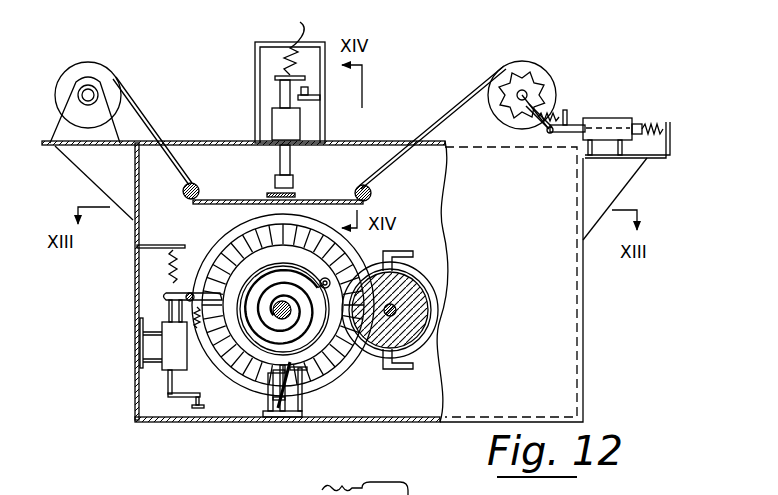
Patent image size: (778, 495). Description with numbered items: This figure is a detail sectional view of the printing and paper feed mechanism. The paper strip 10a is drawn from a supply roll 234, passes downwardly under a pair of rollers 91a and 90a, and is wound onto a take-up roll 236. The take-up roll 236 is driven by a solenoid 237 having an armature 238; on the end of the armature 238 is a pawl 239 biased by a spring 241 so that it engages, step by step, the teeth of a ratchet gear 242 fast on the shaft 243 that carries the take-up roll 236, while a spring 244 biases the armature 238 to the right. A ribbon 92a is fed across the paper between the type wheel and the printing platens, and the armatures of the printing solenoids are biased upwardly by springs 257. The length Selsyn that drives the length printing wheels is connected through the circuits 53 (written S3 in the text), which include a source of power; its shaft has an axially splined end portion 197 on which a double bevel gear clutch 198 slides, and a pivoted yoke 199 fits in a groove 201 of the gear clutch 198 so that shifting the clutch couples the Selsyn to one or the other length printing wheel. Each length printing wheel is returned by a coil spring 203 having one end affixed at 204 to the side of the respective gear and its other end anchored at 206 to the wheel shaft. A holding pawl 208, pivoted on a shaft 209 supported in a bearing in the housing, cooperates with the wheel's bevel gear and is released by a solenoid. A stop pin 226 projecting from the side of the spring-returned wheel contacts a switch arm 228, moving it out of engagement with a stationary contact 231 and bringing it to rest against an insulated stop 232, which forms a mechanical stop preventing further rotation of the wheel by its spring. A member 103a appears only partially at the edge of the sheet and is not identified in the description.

The paper strip 10a is at (152, 141).
The roller 91a is at (199, 186).
The roller 90a is at (363, 185).
The ribbon 92a is at (300, 190).
The spring 257 is at (283, 42).
The supply roll 234 is at (113, 88).
The take-up roll 236 is at (497, 72).
The shaft 243 is at (520, 100).
The ratchet gear 242 is at (540, 95).
The pawl 239 is at (528, 112).
The spring 241 is at (553, 115).
The armature 238 is at (578, 120).
The solenoid 237 is at (622, 118).
The spring 244 is at (660, 114).
The shaft 209 is at (190, 292).
The holding pawl 208 is at (195, 310).
The spring attachment point 204 is at (360, 250).
The coil spring 203 is at (247, 360).
The spring anchor 206 is at (290, 318).
The insulated stop 232 is at (302, 372).
The stationary contact 231 is at (265, 370).
The stop pin 226 is at (270, 365).
The switch arm 228 is at (293, 370).
The double bevel gear clutch 198 is at (440, 299).
The splined end portion 197 is at (292, 318).
The groove 201 is at (425, 290).
The yoke 199 is at (418, 262).
The circuits 53 is at (365, 482).
The member 103a is at (449, 488).